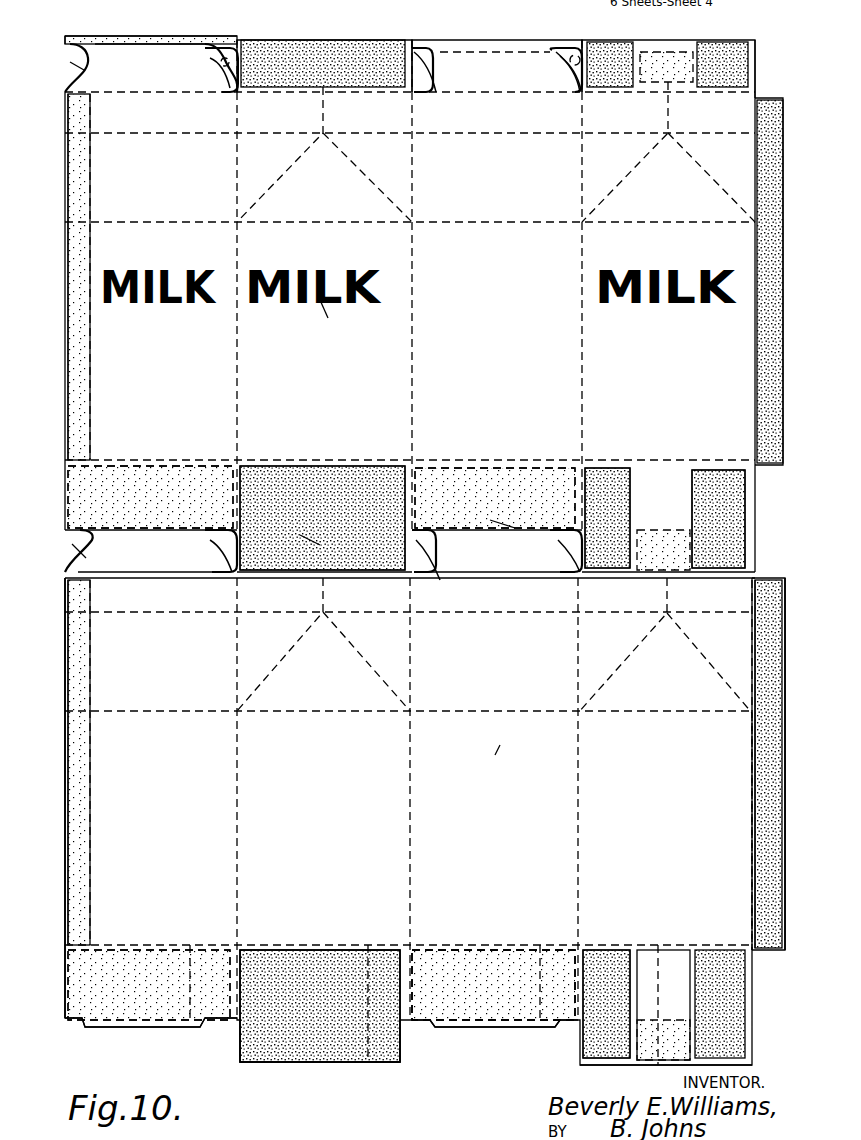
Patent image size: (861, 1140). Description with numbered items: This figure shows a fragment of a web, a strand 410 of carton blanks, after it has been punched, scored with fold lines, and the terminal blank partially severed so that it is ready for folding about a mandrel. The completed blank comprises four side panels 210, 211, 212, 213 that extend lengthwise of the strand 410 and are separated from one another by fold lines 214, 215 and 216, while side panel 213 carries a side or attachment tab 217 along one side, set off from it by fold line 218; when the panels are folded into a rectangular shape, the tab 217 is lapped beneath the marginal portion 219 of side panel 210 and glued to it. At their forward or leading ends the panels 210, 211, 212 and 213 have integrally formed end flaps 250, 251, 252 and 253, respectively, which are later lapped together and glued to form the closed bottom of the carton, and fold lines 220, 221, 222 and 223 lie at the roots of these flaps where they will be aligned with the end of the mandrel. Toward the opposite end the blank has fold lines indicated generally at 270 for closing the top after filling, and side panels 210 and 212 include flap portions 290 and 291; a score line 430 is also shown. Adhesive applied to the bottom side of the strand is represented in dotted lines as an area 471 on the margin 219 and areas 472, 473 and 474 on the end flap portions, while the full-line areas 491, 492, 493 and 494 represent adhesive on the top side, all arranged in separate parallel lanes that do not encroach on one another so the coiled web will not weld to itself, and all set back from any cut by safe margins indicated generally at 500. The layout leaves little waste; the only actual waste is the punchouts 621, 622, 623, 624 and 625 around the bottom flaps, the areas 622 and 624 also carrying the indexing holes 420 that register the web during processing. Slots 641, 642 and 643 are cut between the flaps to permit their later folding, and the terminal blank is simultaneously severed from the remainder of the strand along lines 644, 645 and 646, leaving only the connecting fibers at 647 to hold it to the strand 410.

The side panel 210 is at (158, 808).
The side panel 211 is at (313, 808).
The side panel 212 is at (489, 562).
The side panel 213 is at (666, 808).
The fold line 214 is at (237, 380).
The fold line 215 is at (410, 829).
The fold line 216 is at (582, 375).
The side or attachment tab 217 is at (778, 835).
The fold line 218 is at (752, 880).
The marginal portion 219 is at (65, 812).
The fold line 220 is at (188, 945).
The fold line 221 is at (366, 945).
The fold line 222 is at (537, 945).
The fold line 223 is at (658, 945).
The end flap 250 is at (149, 985).
The end flap 251 is at (320, 1006).
The end flap 252 is at (493, 985).
The end flap 253 is at (663, 1005).
The fold lines 270 is at (150, 612).
The flap portion 290 is at (151, 551).
The flap portion 291 is at (497, 555).
The strand 410 is at (359, 1072).
The indexing holes 420 is at (215, 62).
The score line 430 is at (414, 527).
The adhesive area 471 is at (82, 385).
The adhesive area 472 is at (148, 470).
The adhesive area 473 is at (500, 470).
The adhesive area 474 is at (650, 530).
The adhesive area 491 is at (327, 470).
The adhesive area 492 is at (610, 475).
The adhesive area 493 is at (718, 472).
The adhesive area 494 is at (753, 330).
The safe margins 500 is at (65, 890).
The punchout 621 is at (94, 305).
The punchout 622 is at (228, 78).
The punchout 623 is at (430, 92).
The punchout 624 is at (585, 92).
The punchout 625 is at (775, 75).
The slot 641 is at (237, 498).
The slot 642 is at (412, 498).
The slot 643 is at (582, 492).
The severing line 644 is at (148, 530).
The severing line 645 is at (308, 568).
The severing line 646 is at (702, 575).
The connecting fibers 647 is at (500, 535).